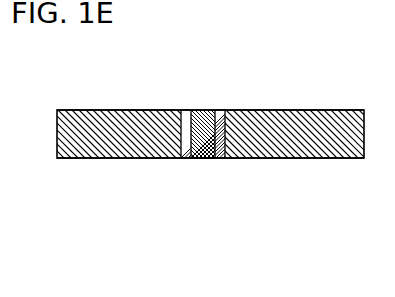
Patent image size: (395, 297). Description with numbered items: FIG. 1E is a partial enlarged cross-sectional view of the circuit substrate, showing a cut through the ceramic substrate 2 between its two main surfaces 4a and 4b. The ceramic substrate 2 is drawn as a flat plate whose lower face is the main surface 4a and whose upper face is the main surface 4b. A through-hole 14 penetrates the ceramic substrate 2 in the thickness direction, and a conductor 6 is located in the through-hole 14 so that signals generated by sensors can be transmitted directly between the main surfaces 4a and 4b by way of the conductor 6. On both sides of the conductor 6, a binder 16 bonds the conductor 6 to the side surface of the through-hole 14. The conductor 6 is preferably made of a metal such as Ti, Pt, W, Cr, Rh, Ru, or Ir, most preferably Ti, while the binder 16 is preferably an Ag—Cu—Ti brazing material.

The ceramic substrate 2 is at (117, 117).
The binder 16 is at (181, 110).
The conductor 6 is at (206, 111).
The through-hole 14 is at (201, 158).
The main surface 4a is at (283, 158).
The main surface 4b is at (283, 110).